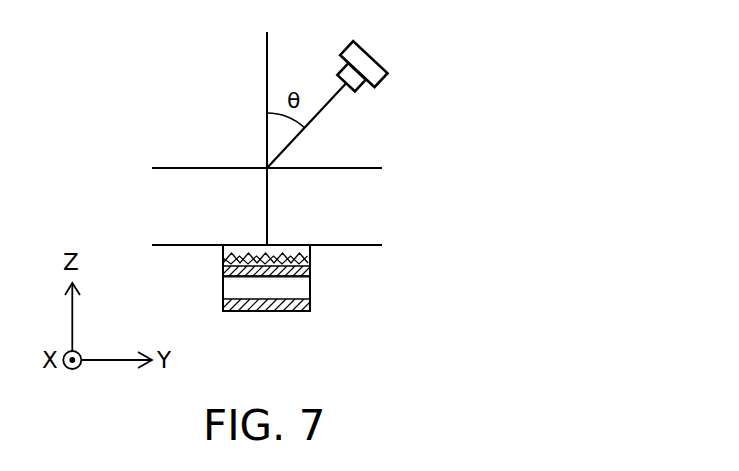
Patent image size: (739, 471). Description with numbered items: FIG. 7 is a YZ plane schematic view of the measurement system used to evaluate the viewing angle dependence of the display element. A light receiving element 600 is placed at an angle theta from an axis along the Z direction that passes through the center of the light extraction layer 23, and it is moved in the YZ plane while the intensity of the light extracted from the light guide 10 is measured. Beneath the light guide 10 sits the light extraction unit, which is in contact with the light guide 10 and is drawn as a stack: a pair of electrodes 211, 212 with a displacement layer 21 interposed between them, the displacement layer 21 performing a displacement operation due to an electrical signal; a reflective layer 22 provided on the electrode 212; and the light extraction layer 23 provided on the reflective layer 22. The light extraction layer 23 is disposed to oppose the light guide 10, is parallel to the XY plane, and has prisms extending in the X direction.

The light receiving element 600 is at (366, 63).
The light guide 10 is at (343, 183).
The light extraction layer 23 is at (297, 248).
The reflective layer 22 is at (310, 267).
The electrode 212 is at (310, 277).
The displacement layer 21 is at (298, 288).
The electrode 211 is at (310, 305).